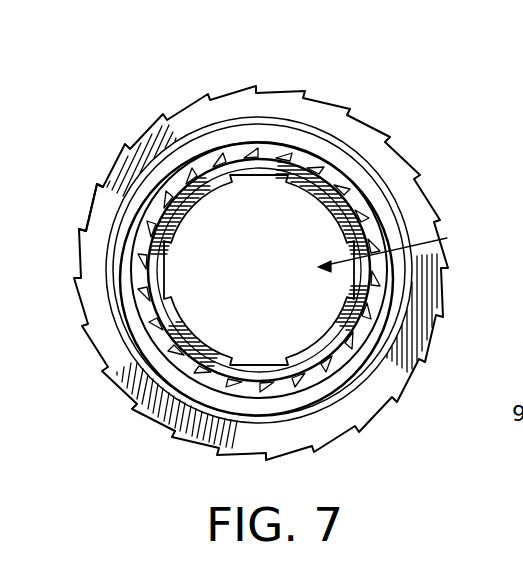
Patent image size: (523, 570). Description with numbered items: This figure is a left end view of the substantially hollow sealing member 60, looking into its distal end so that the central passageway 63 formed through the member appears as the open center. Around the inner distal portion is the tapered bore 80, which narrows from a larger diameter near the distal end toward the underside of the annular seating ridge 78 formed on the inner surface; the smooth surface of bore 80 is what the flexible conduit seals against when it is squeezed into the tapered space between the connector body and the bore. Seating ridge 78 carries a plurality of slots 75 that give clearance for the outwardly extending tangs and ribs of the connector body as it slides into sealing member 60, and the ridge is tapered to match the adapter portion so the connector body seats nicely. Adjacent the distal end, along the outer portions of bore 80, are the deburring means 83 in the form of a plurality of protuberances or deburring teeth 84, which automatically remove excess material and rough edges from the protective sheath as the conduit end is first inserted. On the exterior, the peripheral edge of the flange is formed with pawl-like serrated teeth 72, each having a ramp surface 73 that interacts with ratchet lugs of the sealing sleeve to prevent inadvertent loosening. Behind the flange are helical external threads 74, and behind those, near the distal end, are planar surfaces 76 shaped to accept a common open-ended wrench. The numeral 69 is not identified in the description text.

The sealing member 60 is at (191, 87).
The central passageway 63 is at (399, 247).
The hatched ring segment 69 is at (103, 337).
The pawl-like serrated teeth 72 is at (153, 122).
The ramp surface 73 is at (97, 178).
The helical external threads 74 is at (393, 357).
The slots 75 is at (165, 262).
The planar surfaces 76 is at (274, 135).
The seating ridge 78 is at (320, 140).
The bore 80 is at (215, 187).
The deburring means 83 is at (340, 340).
The deburring teeth 84 is at (345, 375).